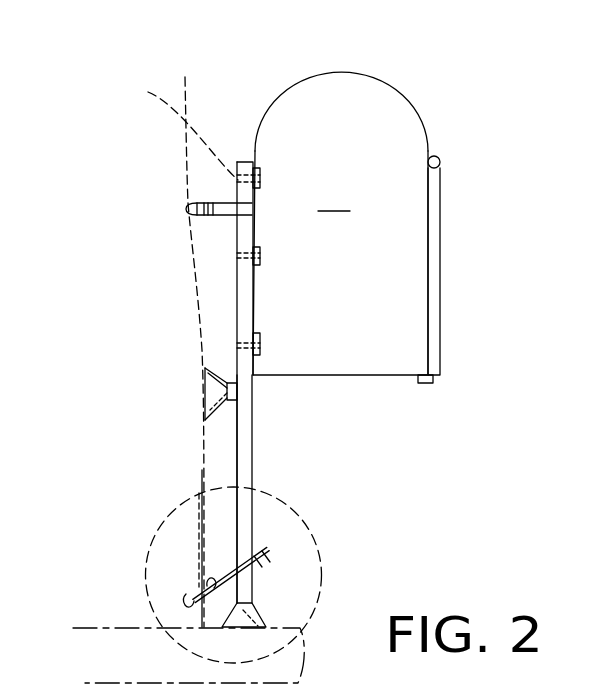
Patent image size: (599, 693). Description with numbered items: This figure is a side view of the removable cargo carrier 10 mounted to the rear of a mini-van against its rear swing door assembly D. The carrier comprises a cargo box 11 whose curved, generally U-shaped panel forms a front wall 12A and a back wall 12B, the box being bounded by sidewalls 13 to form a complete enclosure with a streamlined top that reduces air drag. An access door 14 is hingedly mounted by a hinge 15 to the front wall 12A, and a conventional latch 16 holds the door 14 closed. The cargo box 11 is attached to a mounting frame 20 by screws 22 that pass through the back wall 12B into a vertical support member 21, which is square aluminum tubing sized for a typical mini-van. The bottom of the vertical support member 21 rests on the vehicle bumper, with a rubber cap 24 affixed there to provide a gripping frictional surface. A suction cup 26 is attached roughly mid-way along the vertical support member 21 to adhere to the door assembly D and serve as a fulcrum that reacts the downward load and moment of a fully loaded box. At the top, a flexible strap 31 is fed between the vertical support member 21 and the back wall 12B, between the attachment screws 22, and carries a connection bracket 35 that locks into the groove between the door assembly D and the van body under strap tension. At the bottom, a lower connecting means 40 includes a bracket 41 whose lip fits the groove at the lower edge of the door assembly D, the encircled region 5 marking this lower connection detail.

The removable cargo carrier 10 is at (368, 75).
The cargo box 11 is at (415, 110).
The front wall 12A is at (430, 308).
The back wall 12B is at (239, 162).
The sidewall 13 is at (334, 200).
The access door 14 is at (440, 248).
The hinge 15 is at (438, 157).
The latch 16 is at (423, 385).
The mounting frame 20 is at (254, 448).
The vertical support member 21 is at (250, 412).
The screws 22 is at (317, 328).
The cap 24 is at (267, 618).
The suction cup 26 is at (207, 415).
The flexible strap 31 is at (230, 216).
The connection bracket 35 is at (186, 209).
The lower connecting means 40 is at (262, 576).
The bracket 41 is at (185, 597).
The detail region 5 is at (312, 533).
The rear swing door assembly D is at (205, 350).